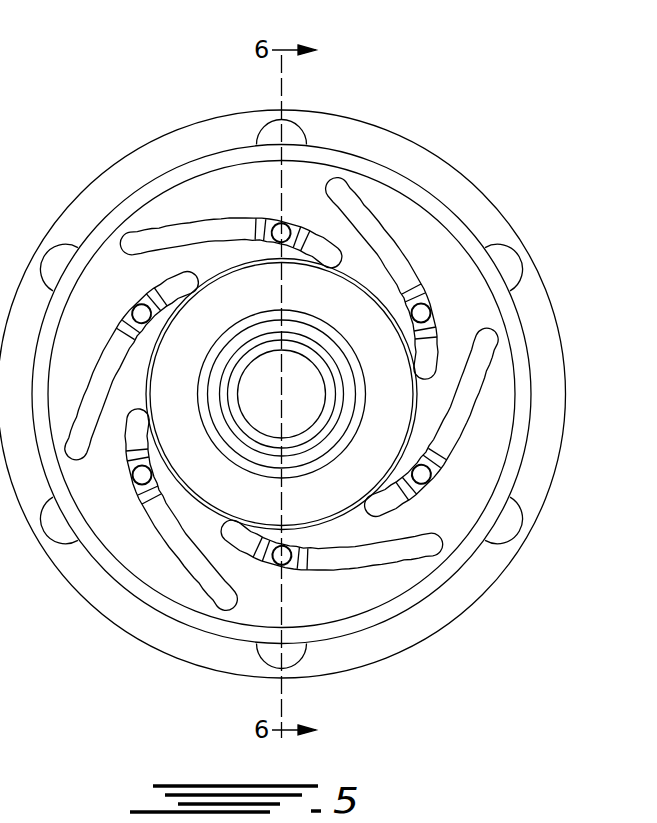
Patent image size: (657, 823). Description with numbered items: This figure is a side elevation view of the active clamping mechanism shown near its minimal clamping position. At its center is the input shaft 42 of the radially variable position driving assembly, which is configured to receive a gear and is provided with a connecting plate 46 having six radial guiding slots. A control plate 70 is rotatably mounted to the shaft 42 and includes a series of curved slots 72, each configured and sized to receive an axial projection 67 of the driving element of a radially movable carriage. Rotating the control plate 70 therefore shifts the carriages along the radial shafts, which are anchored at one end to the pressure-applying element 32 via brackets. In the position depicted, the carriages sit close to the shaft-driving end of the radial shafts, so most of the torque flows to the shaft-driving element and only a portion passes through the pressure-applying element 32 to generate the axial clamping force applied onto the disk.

The pressure-applying element 32 is at (410, 165).
The connecting plate 46 is at (334, 160).
The input shaft 42 is at (378, 394).
The control plate 70 is at (469, 253).
The axial projections 67 is at (428, 306).
The curved slots 72 is at (485, 353).